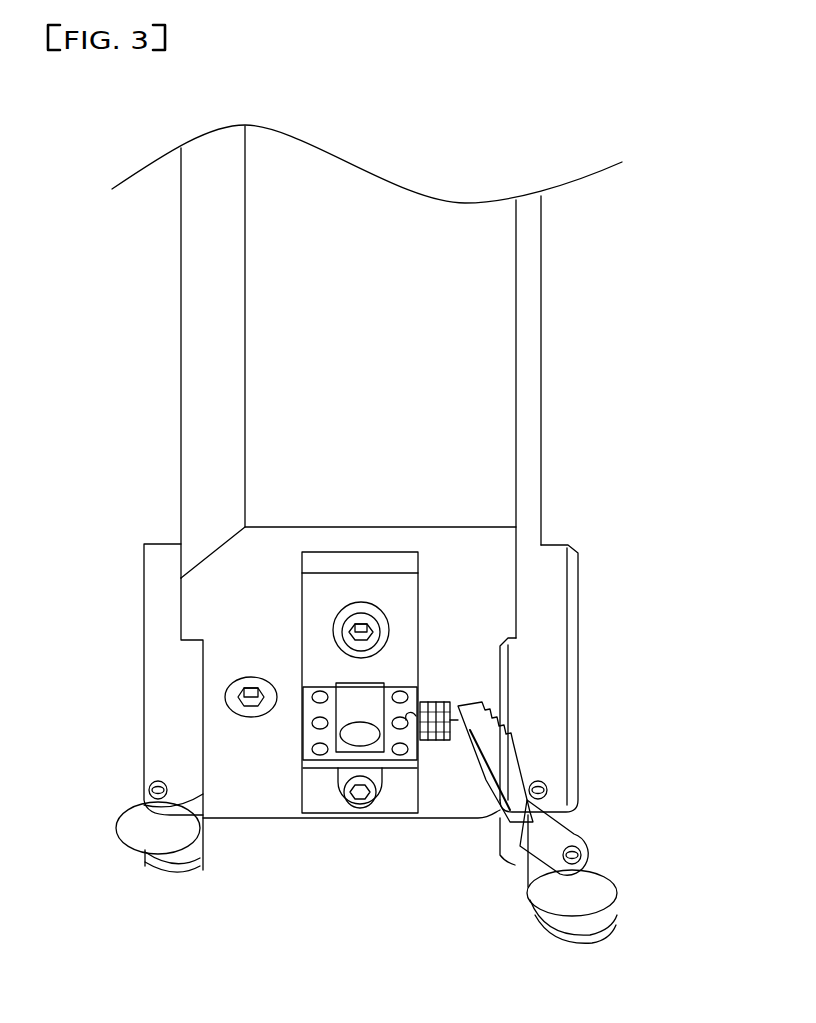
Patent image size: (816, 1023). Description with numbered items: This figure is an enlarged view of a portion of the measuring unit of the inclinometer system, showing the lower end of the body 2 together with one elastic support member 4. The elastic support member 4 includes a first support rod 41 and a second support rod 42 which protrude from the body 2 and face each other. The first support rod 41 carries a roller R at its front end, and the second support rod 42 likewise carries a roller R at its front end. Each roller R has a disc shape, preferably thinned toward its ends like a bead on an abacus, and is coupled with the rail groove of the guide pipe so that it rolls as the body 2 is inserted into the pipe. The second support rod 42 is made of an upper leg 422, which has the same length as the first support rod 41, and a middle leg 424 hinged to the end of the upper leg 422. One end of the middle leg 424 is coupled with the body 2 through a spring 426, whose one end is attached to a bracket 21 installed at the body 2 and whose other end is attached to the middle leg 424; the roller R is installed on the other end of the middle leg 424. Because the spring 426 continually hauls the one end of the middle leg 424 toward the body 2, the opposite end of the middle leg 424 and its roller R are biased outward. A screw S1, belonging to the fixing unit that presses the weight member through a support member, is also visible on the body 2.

The body 2 is at (473, 302).
The elastic support member 4 is at (244, 891).
The bracket 21 is at (330, 760).
The first support rod 41 is at (141, 681).
The second support rod 42 is at (571, 716).
The upper leg 422 is at (556, 700).
The middle leg 424 is at (570, 836).
The spring 426 is at (443, 743).
The screw S1 is at (234, 716).
The roller R is at (130, 835).